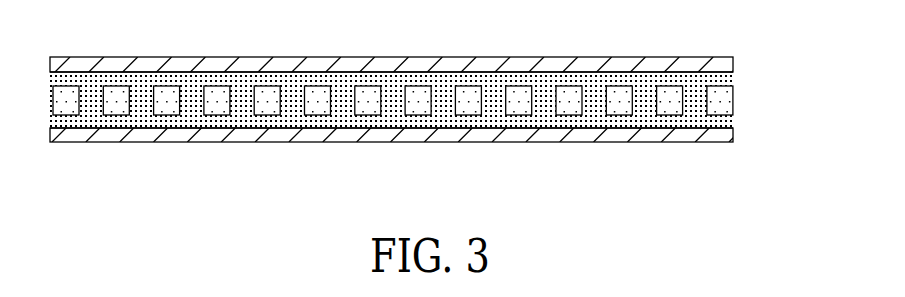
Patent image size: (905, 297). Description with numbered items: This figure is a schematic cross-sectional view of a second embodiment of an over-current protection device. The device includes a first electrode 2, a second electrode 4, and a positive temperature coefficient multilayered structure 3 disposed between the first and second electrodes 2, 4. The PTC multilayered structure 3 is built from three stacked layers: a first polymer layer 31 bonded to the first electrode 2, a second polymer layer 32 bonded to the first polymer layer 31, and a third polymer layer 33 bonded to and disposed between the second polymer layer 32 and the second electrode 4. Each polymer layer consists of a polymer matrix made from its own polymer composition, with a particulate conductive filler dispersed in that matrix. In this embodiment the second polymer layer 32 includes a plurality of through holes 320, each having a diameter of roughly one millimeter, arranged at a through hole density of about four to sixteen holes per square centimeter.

The first electrode 2 is at (718, 136).
The positive temperature coefficient (PTC) multilayered structure 3 is at (431, 129).
The first polymer layer 31 is at (727, 123).
The second polymer layer 32 is at (723, 102).
The third polymer layer 33 is at (723, 79).
The through hole 320 is at (696, 106).
The second electrode 4 is at (714, 66).